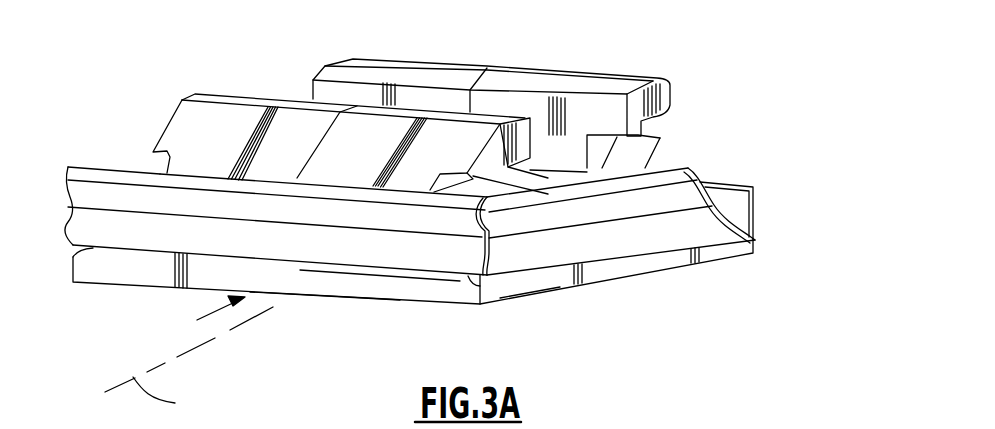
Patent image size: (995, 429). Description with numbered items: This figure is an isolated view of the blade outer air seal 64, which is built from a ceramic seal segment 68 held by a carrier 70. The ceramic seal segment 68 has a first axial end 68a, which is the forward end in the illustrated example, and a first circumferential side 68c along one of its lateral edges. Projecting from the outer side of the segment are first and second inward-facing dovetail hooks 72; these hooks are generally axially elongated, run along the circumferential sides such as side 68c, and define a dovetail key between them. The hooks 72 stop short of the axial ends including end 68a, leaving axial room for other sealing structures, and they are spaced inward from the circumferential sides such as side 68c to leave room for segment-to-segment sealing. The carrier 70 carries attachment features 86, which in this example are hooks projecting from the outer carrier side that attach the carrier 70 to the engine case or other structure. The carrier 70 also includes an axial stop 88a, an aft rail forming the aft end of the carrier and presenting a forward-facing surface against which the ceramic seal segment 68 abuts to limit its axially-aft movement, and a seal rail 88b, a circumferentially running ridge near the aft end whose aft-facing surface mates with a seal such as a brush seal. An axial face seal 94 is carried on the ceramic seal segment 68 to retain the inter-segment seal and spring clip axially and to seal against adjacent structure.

The seal 64 is at (737, 85).
The ceramic seal segment 68 is at (755, 253).
The first axial end 68a is at (437, 288).
The first circumferential side 68c is at (300, 292).
The carrier 70 is at (182, 100).
The inward-facing dovetail hooks 72 is at (672, 168).
The attachment features 86 is at (258, 96).
The axial stop 88a is at (756, 240).
The seal rail 88b is at (662, 140).
The axial face seal 94 is at (78, 166).